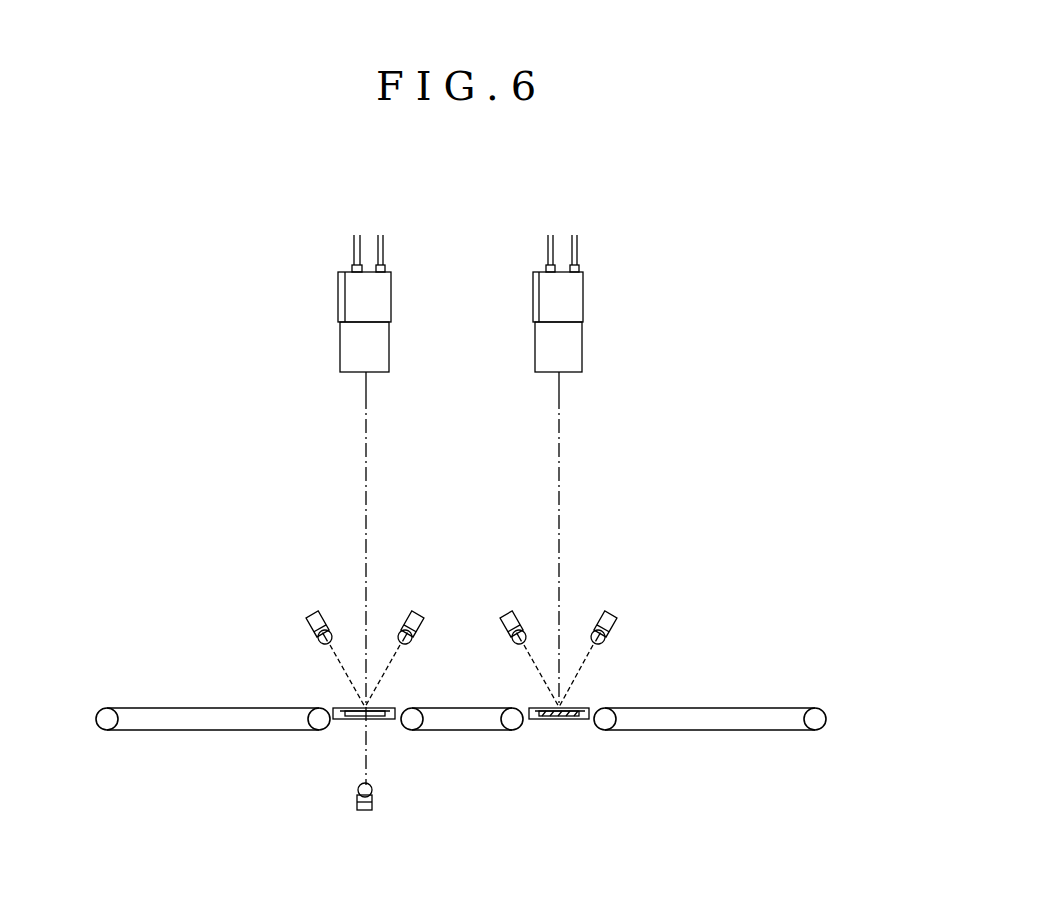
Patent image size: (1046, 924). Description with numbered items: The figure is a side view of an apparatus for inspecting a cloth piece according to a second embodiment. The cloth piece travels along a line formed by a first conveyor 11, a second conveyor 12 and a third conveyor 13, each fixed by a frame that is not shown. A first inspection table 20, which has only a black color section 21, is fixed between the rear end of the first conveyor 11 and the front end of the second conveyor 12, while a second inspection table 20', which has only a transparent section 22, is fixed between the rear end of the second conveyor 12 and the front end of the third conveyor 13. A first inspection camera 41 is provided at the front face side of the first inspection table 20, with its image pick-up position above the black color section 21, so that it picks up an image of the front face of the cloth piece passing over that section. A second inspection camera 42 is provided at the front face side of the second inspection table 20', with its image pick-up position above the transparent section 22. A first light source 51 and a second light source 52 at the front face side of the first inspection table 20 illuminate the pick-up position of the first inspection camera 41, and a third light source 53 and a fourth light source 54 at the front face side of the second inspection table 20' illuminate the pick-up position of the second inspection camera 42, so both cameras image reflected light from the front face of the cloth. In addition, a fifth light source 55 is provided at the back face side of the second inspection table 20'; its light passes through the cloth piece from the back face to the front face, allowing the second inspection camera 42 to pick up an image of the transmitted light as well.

The first conveyor 11 is at (748, 732).
The second conveyor 12 is at (455, 732).
The third conveyor 13 is at (172, 732).
The first inspection table 20 is at (629, 681).
The second inspection table 20' is at (292, 681).
The black color section 21 is at (568, 720).
The transparent section 22 is at (350, 720).
The first inspection camera 41 is at (570, 295).
The second inspection camera 42 is at (375, 295).
The first light source 51 is at (581, 629).
The second light source 52 is at (533, 629).
The third light source 53 is at (388, 629).
The fourth light source 54 is at (340, 629).
The fifth light source 55 is at (372, 790).